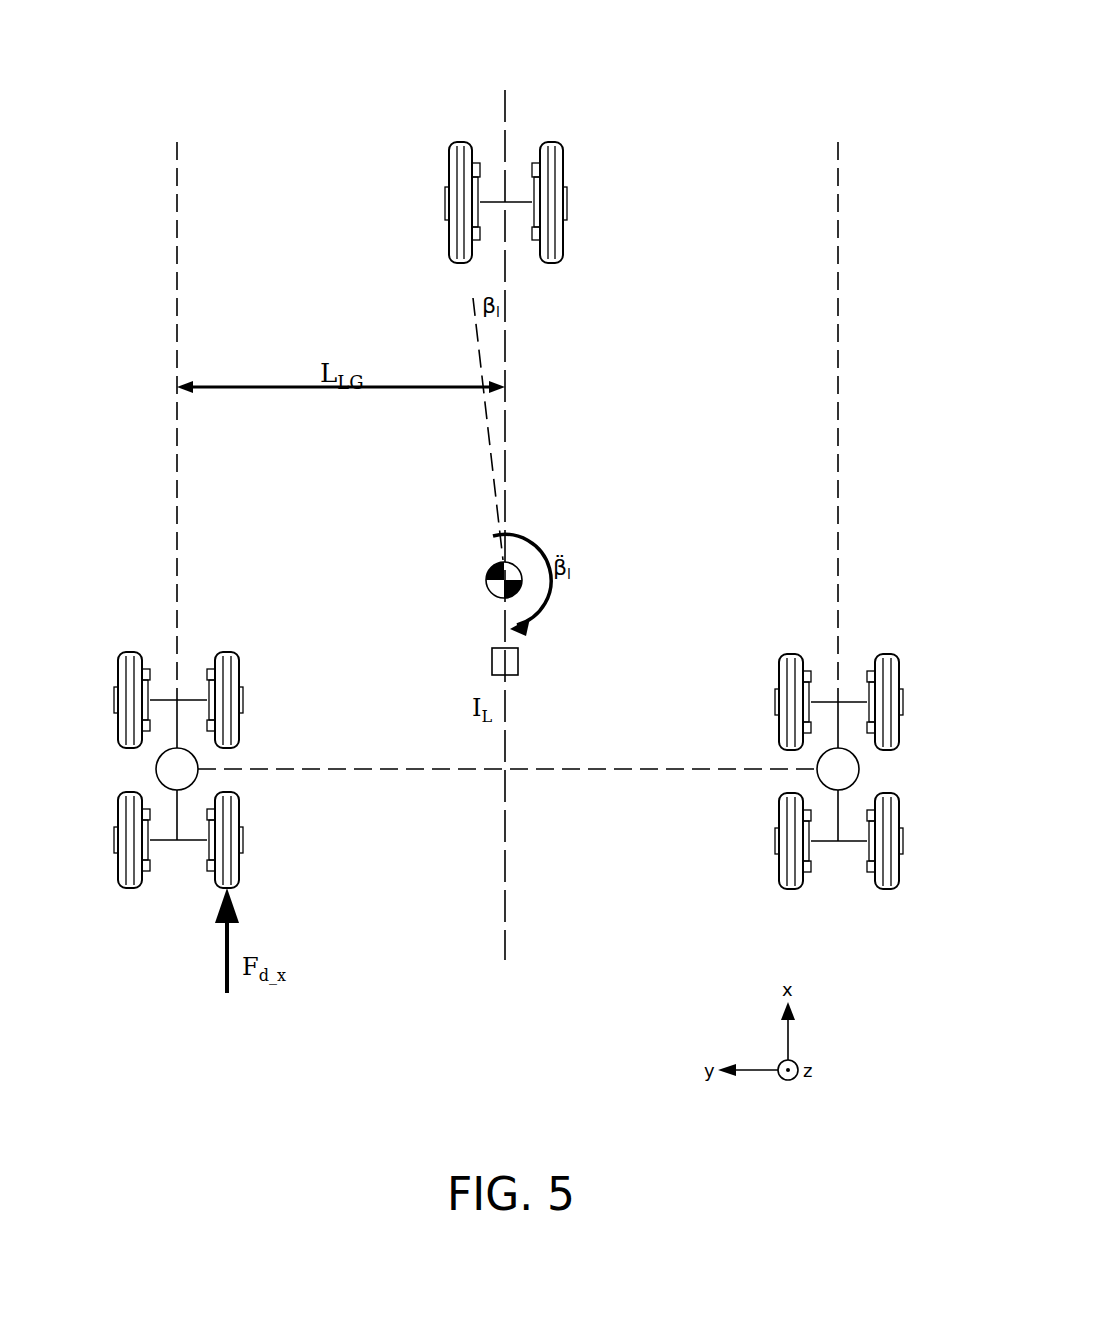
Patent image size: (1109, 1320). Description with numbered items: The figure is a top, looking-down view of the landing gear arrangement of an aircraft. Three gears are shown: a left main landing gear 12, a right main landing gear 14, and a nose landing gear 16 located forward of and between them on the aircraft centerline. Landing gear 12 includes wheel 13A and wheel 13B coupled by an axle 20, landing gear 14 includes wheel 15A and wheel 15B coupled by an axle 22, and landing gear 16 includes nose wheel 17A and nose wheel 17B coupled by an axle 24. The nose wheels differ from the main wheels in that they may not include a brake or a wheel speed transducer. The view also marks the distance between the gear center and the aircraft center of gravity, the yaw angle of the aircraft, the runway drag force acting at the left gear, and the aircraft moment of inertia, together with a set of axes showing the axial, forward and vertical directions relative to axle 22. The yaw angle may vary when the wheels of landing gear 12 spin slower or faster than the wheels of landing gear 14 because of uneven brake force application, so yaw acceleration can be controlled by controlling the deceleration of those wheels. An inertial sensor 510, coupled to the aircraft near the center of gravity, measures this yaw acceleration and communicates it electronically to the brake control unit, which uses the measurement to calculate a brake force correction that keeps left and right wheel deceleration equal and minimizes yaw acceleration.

The landing gear 12 is at (177, 717).
The wheel 13A is at (118, 672).
The wheel 13B is at (239, 677).
The landing gear 14 is at (845, 717).
The wheel 15A is at (899, 677).
The wheel 15B is at (779, 675).
The landing gear 16 is at (521, 143).
The nose wheel 17A is at (448, 176).
The nose wheel 17B is at (563, 177).
The axle 20 is at (180, 698).
The axle 22 is at (839, 702).
The axle 24 is at (509, 200).
The inertial sensor 510 is at (492, 657).